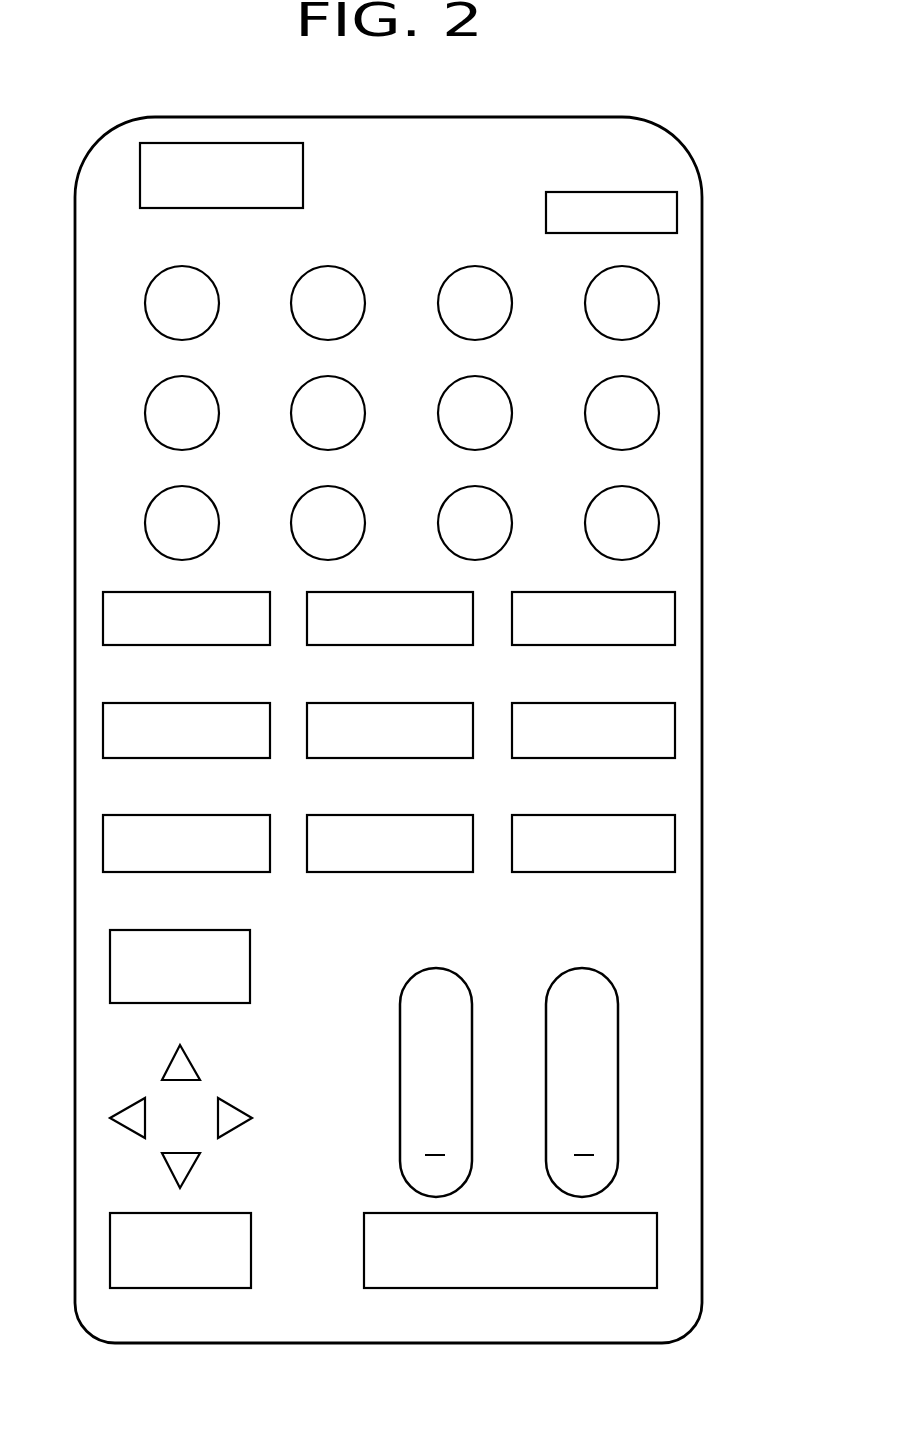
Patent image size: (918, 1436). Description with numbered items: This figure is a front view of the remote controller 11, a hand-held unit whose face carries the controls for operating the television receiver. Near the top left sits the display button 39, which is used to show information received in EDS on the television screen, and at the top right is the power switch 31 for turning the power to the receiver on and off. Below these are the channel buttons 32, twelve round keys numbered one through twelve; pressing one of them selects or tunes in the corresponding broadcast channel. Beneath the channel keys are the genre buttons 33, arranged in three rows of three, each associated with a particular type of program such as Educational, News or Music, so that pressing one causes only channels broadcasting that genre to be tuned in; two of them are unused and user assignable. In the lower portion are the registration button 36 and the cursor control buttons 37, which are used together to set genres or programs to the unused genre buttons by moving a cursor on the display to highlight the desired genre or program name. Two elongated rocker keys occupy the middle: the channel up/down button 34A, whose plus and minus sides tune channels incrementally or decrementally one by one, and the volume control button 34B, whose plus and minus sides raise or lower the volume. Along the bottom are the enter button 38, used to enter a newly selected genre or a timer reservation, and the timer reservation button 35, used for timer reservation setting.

The remote controller 11 is at (576, 117).
The display button 39 is at (140, 180).
The power switch 31 is at (677, 212).
The channel buttons 32 is at (675, 364).
The genre buttons 33 is at (683, 732).
The registration button 36 is at (110, 969).
The cursor control buttons 37 is at (96, 1112).
The channel up/down button 34A is at (400, 1020).
The volume control button 34B is at (618, 1155).
The enter button 38 is at (110, 1251).
The timer reservation button 35 is at (657, 1250).